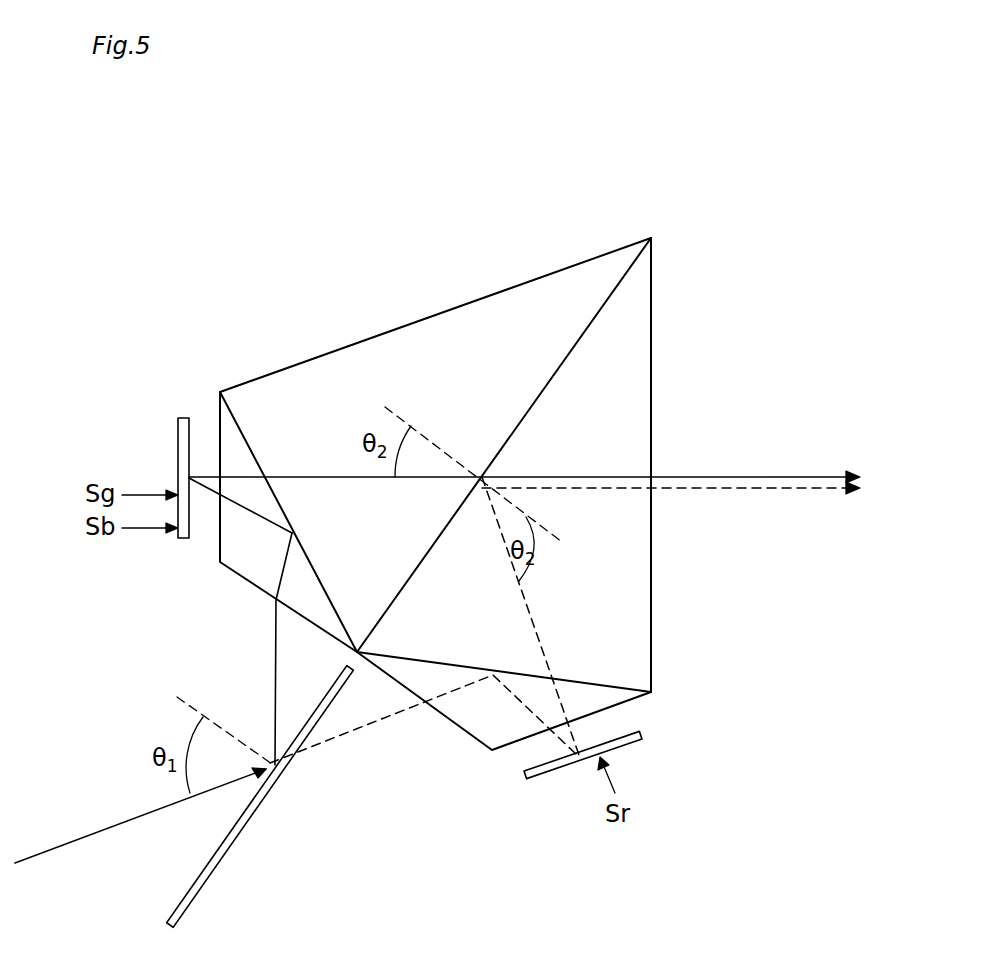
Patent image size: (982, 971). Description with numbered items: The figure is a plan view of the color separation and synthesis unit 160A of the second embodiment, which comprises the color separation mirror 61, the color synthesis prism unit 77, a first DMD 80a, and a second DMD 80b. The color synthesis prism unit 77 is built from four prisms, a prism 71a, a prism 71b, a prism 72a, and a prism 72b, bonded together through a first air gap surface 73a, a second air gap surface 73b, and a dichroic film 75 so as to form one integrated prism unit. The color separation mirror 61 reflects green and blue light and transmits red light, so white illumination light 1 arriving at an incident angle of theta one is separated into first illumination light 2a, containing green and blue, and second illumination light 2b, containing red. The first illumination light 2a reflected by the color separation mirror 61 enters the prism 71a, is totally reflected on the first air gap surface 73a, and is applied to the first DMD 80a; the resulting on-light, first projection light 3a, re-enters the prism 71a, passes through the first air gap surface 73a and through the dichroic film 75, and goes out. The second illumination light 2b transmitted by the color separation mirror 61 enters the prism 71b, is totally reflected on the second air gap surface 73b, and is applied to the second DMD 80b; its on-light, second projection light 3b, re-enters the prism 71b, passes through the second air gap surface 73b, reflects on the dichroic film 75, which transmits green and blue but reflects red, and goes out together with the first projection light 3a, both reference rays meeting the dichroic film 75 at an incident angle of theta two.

The color separation and synthesis unit 160A is at (107, 203).
The prism 71a is at (227, 543).
The prism 71b is at (497, 730).
The prism 72a is at (533, 305).
The prism 72b is at (625, 378).
The first air gap surface 73a is at (232, 402).
The second air gap surface 73b is at (595, 683).
The dichroic film 75 is at (605, 303).
The color synthesis prism unit 77 is at (437, 312).
The first DMD 80a is at (178, 478).
The second DMD 80b is at (557, 770).
The color separation mirror 61 is at (205, 877).
The white illumination light 1 is at (85, 837).
The first illumination light 2a is at (275, 690).
The second illumination light 2b is at (332, 747).
The first projection light 3a is at (290, 477).
The second projection light 3b is at (518, 580).